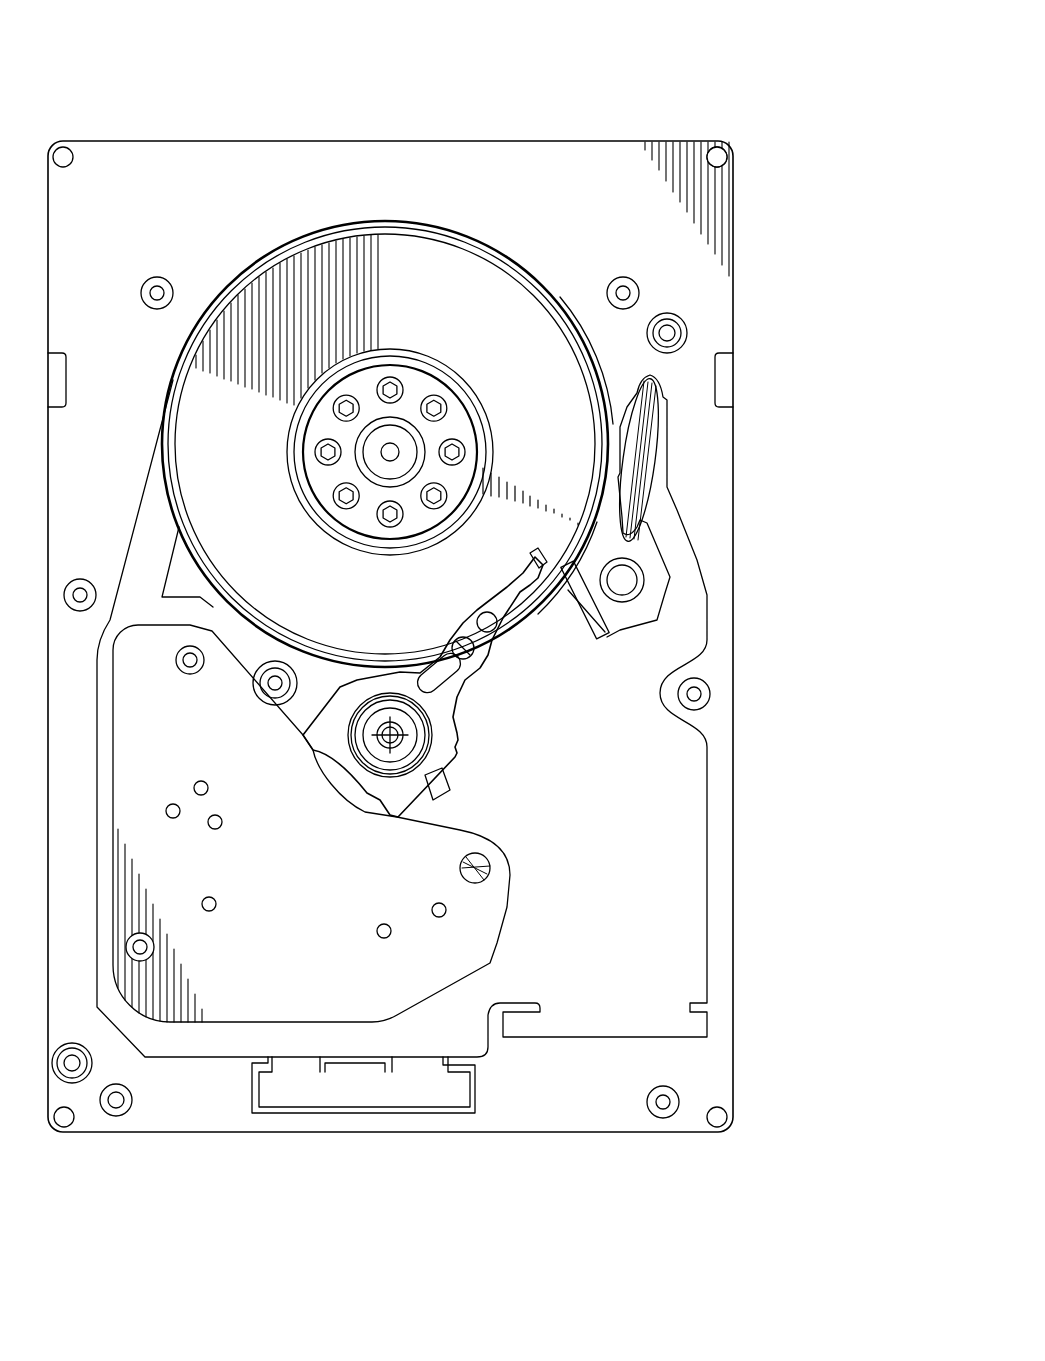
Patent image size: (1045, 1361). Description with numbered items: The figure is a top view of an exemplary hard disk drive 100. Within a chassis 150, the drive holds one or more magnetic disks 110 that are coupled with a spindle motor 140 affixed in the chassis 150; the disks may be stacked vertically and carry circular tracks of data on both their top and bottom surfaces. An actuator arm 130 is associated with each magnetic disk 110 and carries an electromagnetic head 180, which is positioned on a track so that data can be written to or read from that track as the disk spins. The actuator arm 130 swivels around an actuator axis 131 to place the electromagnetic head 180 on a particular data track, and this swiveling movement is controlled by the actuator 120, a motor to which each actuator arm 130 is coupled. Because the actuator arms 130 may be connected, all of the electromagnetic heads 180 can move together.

The hard disk drive 100 is at (582, 60).
The magnetic disk 110 is at (478, 280).
The actuator 120 is at (483, 920).
The actuator arm 130 is at (472, 630).
The actuator axis 131 is at (402, 740).
The spindle motor 140 is at (378, 456).
The chassis 150 is at (175, 141).
The electromagnetic head 180 is at (530, 560).